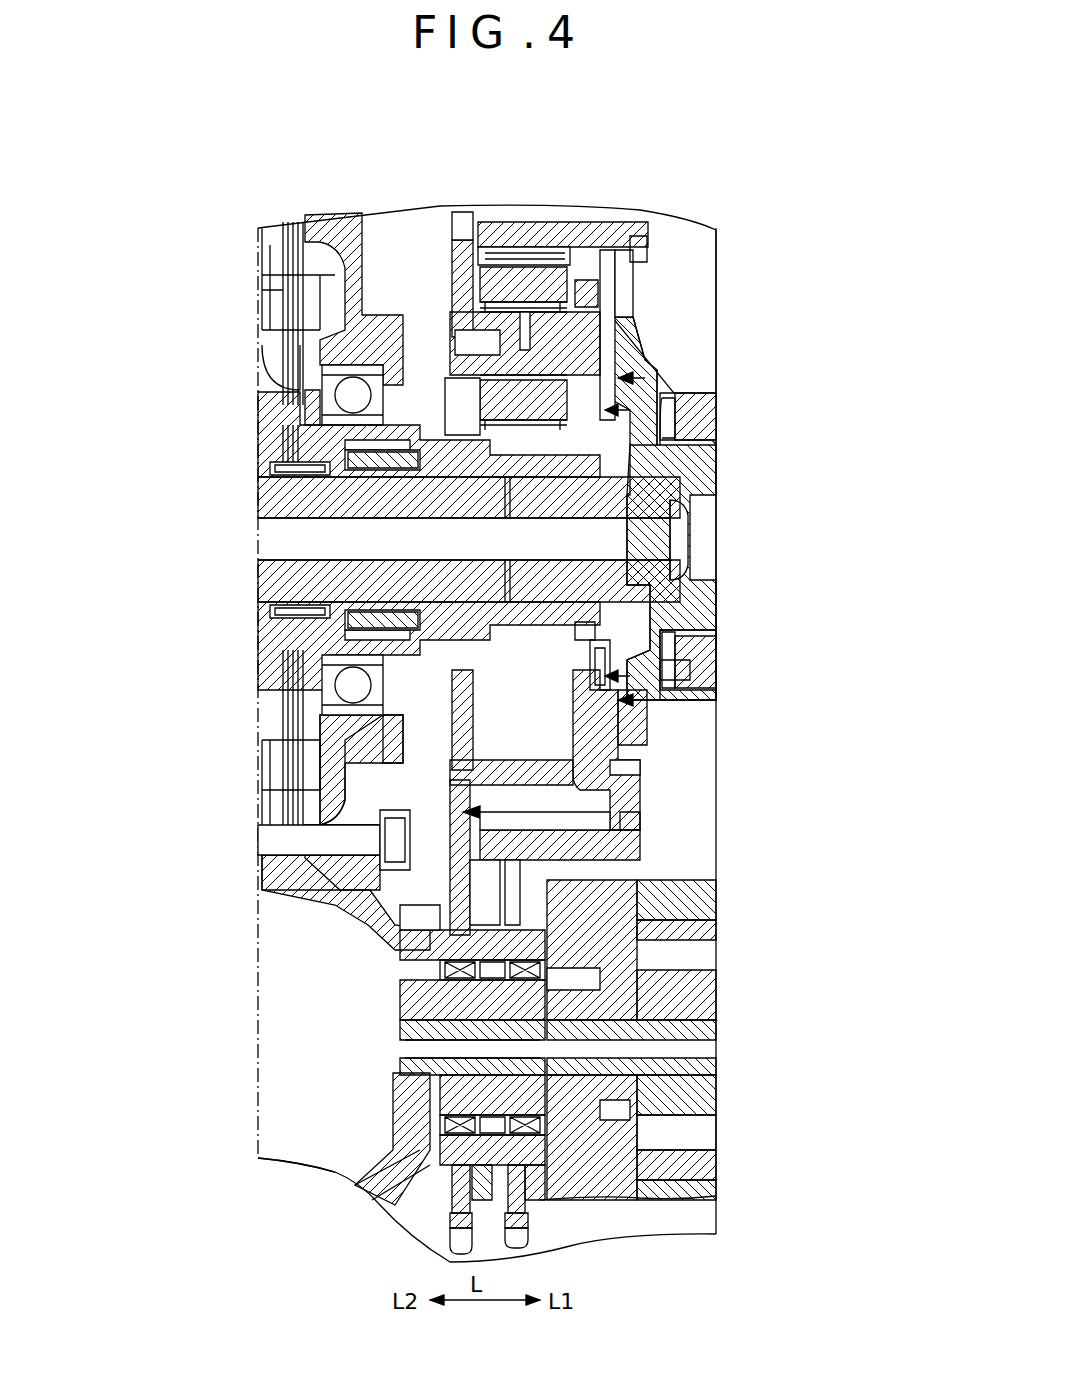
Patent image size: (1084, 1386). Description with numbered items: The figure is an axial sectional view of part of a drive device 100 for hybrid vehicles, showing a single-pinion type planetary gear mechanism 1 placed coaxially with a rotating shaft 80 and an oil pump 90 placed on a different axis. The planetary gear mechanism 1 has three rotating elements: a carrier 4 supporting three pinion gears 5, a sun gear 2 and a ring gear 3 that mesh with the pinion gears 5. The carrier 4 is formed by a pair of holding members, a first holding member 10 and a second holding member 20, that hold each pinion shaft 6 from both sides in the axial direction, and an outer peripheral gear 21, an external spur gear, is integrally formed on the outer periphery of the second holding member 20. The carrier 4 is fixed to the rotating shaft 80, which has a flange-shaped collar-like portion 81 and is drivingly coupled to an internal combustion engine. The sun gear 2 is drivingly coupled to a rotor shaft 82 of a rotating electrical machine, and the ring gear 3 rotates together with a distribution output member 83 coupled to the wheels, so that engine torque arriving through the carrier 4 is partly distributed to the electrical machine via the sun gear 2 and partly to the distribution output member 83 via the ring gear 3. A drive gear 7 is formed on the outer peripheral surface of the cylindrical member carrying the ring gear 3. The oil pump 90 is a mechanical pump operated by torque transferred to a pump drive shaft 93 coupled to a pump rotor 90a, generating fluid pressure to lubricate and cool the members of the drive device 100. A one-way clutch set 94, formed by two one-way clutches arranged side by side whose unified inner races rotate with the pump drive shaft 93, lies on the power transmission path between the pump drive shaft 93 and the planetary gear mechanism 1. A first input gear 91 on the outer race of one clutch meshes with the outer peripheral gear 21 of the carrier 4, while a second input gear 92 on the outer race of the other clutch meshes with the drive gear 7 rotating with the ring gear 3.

The planetary gear mechanism 1 is at (692, 265).
The sun gear 2 is at (470, 650).
The ring gear 3 is at (565, 820).
The carrier 4 is at (435, 275).
The pinion gear 5 is at (522, 240).
The pinion shaft 6 is at (450, 370).
The drive gear 7 is at (455, 878).
The first holding member 10 is at (605, 725).
The second holding member 20 is at (480, 710).
The outer peripheral gear 21 is at (470, 215).
The rotating shaft 80 is at (300, 480).
The collar-like portion 81 is at (580, 660).
The rotor shaft 82 is at (262, 645).
The distribution output member 83 is at (655, 695).
The oil pump 90 is at (720, 975).
The pump rotor 90a is at (722, 1095).
The first input gear 91 is at (455, 1238).
The second input gear 92 is at (520, 1230).
The pump drive shaft 93 is at (420, 1000).
The one-way clutch set 94 is at (425, 955).
The drive device 100 is at (282, 1040).